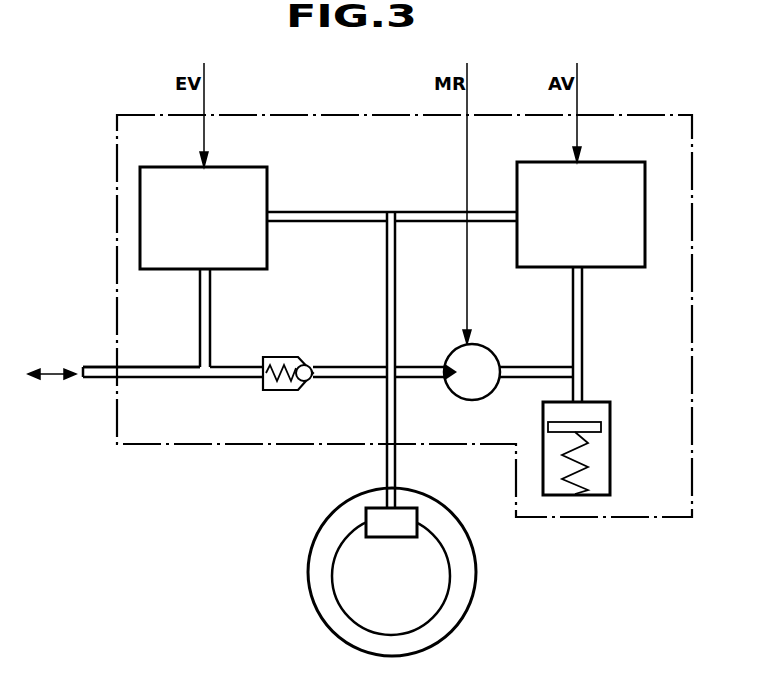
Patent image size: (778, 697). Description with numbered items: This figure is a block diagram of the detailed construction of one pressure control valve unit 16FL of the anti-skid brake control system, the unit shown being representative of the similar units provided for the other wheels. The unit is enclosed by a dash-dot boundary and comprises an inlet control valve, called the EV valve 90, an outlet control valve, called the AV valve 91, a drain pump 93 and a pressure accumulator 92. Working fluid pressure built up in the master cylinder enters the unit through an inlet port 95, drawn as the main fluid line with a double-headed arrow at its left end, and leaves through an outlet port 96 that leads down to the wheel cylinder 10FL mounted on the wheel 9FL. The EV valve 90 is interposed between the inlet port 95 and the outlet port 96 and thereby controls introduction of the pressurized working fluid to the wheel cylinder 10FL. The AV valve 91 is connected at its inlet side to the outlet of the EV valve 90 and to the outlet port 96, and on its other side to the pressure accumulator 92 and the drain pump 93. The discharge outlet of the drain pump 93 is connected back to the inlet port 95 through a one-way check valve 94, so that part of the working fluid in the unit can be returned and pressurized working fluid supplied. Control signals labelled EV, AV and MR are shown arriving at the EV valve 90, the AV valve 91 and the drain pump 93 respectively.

The inlet control valve (EV valve) 90 is at (256, 166).
The outlet control valve (AV valve) 91 is at (627, 162).
The pressure accumulator 92 is at (611, 423).
The drain pump 93 is at (493, 353).
The one-way check valve 94 is at (292, 357).
The inlet port 95 is at (145, 380).
The outlet port 96 is at (396, 468).
The pressure control valve unit 16FL is at (205, 446).
The wheel cylinder 10FL is at (398, 538).
The wheel 9FL is at (332, 634).